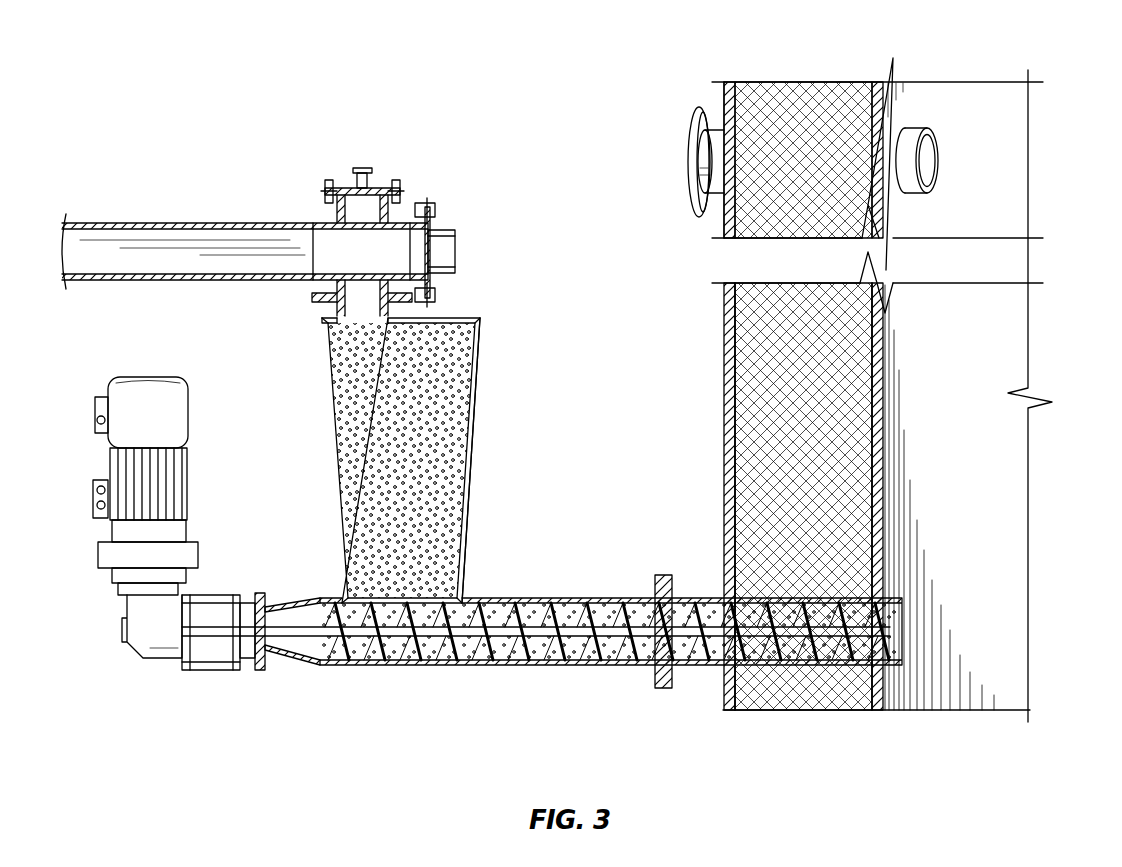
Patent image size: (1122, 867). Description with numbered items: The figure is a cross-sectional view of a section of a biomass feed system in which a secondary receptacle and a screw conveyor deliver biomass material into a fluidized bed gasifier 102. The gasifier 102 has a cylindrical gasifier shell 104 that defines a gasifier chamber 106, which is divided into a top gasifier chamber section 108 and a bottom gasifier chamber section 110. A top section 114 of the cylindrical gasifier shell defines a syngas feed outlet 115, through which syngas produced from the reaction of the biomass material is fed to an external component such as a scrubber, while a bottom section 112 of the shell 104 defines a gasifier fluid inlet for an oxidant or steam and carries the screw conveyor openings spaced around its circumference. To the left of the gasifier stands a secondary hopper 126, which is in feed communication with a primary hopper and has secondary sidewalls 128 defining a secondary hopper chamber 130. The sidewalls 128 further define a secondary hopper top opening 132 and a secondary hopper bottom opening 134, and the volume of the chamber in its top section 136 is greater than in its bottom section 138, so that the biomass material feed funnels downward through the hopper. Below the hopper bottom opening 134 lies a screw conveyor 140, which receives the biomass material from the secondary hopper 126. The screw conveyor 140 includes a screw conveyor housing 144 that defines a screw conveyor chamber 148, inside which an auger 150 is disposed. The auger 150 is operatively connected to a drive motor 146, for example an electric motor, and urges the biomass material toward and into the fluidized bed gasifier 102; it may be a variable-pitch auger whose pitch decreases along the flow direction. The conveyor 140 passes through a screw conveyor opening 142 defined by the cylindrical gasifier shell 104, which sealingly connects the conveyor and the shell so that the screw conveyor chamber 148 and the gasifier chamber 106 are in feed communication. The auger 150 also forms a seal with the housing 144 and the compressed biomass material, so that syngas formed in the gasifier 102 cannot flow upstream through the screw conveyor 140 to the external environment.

The fluidized bed gasifier 102 is at (724, 320).
The cylindrical gasifier shell 104 is at (732, 372).
The gasifier chamber 106 is at (939, 497).
The top gasifier chamber section 108 is at (785, 100).
The bottom gasifier chamber section 110 is at (1028, 530).
The bottom section of the cylindrical gasifier shell 112 is at (722, 698).
The top section of the cylindrical gasifier shell 114 is at (724, 98).
The syngas feed outlet 115 is at (690, 160).
The secondary hopper 126 is at (322, 415).
The secondary sidewall 128 is at (470, 495).
The secondary hopper chamber 130 is at (360, 484).
The secondary hopper top opening 132 is at (360, 325).
The secondary hopper bottom opening 134 is at (350, 600).
The top section of the secondary hopper chamber 136 is at (340, 368).
The bottom section of the secondary hopper chamber 138 is at (445, 590).
The screw conveyor 140 is at (385, 672).
The screw conveyor opening 142 is at (886, 668).
The screw conveyor housing 144 is at (522, 665).
The drive motor 146 is at (190, 478).
The screw conveyor chamber 148 is at (440, 665).
The auger 150 is at (343, 630).